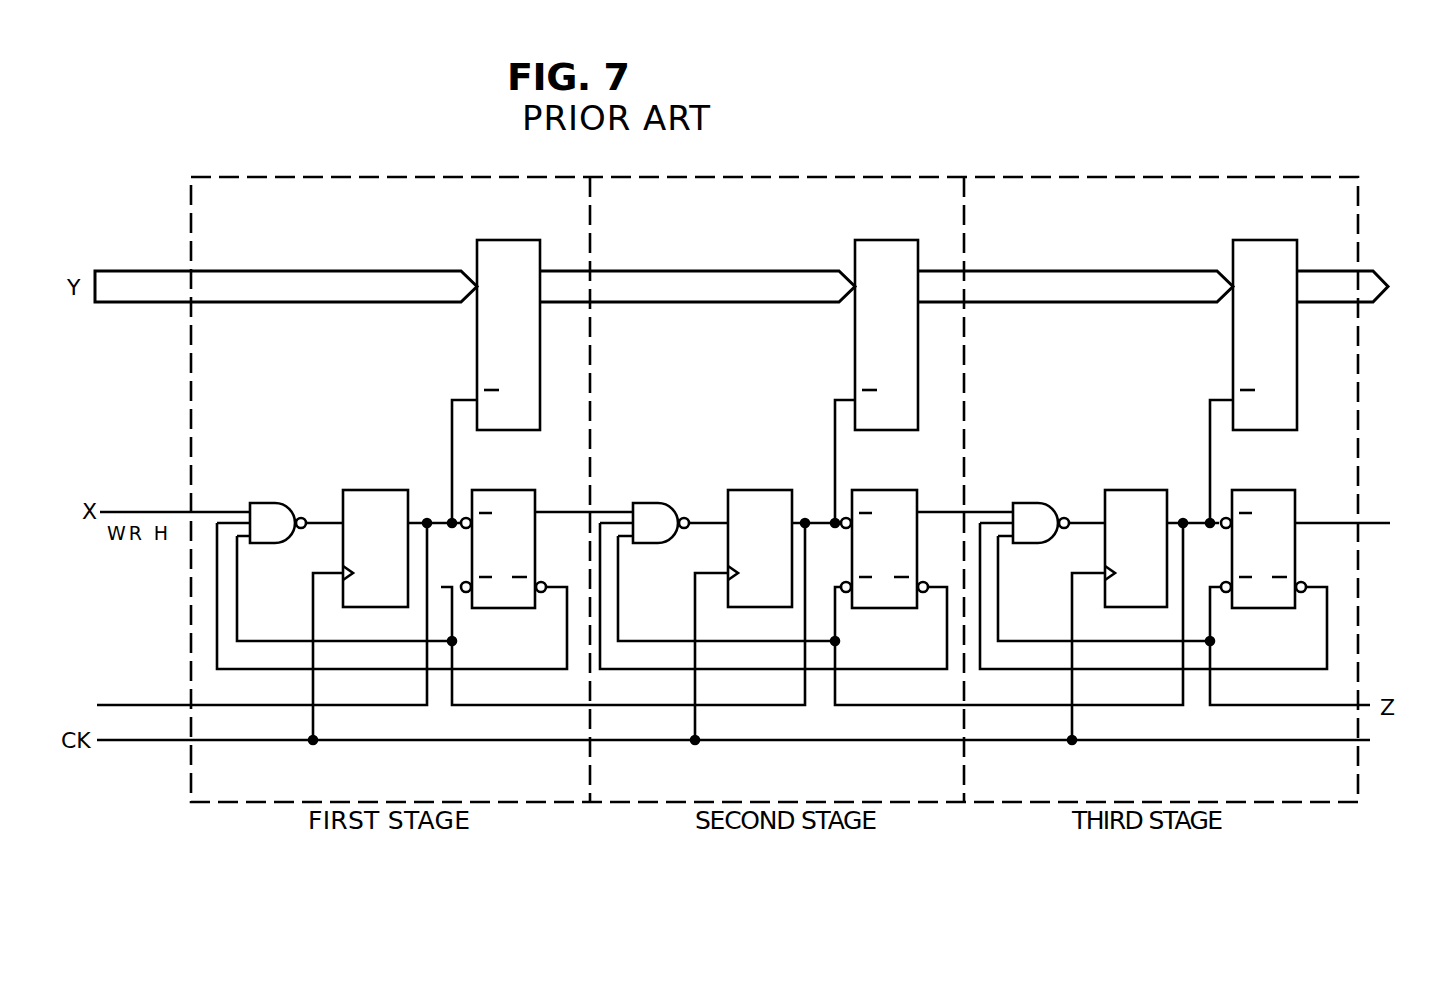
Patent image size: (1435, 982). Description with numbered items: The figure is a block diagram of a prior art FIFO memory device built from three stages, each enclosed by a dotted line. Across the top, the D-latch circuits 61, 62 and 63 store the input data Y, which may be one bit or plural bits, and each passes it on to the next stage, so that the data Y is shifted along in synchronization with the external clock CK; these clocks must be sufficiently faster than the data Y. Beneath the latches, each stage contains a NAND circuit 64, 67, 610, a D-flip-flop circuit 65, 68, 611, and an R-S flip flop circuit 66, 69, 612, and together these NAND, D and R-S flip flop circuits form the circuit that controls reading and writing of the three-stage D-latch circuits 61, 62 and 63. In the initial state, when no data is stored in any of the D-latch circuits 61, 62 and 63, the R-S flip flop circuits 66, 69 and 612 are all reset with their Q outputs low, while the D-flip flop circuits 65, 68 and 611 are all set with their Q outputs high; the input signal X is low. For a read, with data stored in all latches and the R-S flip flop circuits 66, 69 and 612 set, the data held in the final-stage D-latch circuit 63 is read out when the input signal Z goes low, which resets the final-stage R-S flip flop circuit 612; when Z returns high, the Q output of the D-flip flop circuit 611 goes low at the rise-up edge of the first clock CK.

The D-latch circuit 61 is at (511, 240).
The D-latch circuit 62 is at (895, 240).
The D-latch circuit 63 is at (1272, 240).
The NAND circuit 64 is at (273, 503).
The D-flip-flop circuit 65 is at (382, 490).
The R-S flip flop circuit 66 is at (509, 490).
The NAND circuit 67 is at (658, 503).
The D-flip-flop circuit 68 is at (759, 490).
The R-S flip flop circuit 69 is at (883, 490).
The NAND circuit 610 is at (1031, 503).
The D-flip-flop circuit 611 is at (1130, 490).
The R-S flip flop circuit 612 is at (1262, 490).